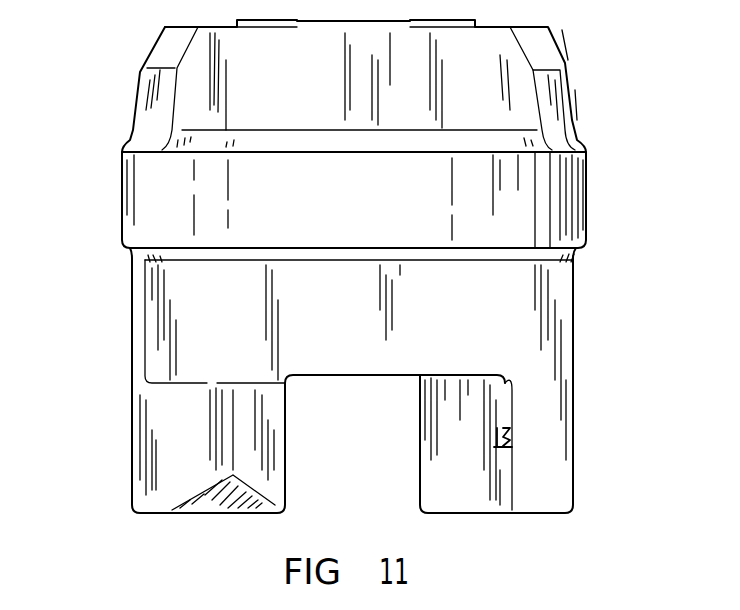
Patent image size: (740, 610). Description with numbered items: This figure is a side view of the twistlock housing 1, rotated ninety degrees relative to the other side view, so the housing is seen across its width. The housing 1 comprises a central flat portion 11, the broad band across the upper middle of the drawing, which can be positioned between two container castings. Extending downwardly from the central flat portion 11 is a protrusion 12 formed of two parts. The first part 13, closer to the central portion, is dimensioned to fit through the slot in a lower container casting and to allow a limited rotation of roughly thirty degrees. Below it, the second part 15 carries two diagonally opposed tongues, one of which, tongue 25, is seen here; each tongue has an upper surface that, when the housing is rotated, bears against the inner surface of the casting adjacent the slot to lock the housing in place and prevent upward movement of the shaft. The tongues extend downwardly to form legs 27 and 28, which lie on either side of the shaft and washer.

The housing 1 is at (112, 80).
The central flat portion 11 is at (610, 195).
The protrusion 12 is at (598, 425).
The first part 13 is at (463, 330).
The second part 15 is at (503, 437).
The tongue 25 is at (180, 407).
The leg 27 is at (133, 513).
The leg 28 is at (463, 455).